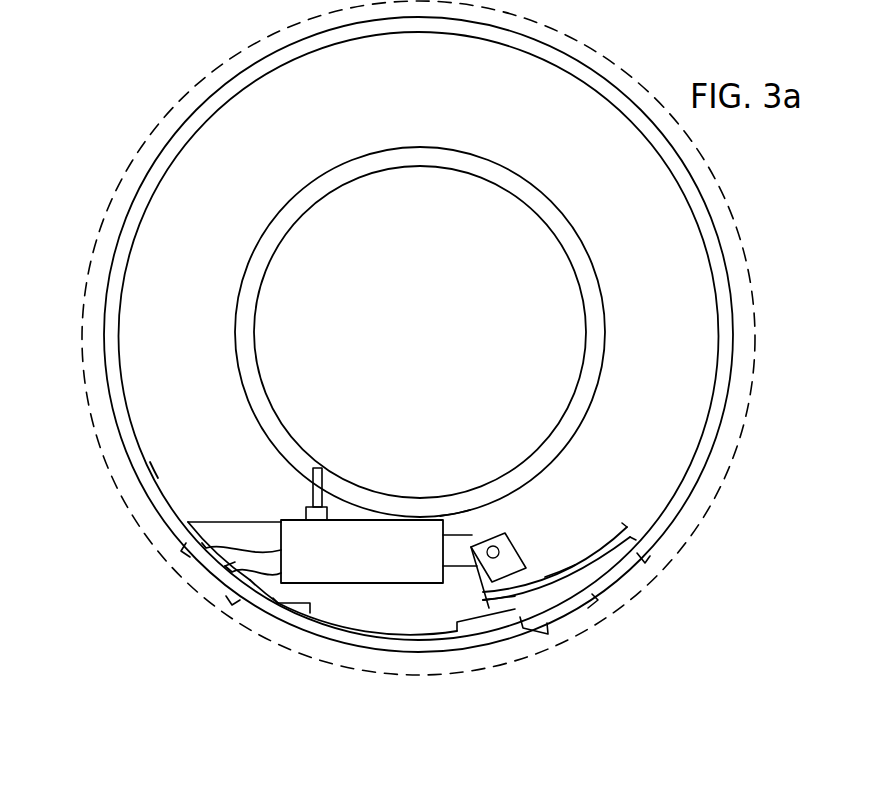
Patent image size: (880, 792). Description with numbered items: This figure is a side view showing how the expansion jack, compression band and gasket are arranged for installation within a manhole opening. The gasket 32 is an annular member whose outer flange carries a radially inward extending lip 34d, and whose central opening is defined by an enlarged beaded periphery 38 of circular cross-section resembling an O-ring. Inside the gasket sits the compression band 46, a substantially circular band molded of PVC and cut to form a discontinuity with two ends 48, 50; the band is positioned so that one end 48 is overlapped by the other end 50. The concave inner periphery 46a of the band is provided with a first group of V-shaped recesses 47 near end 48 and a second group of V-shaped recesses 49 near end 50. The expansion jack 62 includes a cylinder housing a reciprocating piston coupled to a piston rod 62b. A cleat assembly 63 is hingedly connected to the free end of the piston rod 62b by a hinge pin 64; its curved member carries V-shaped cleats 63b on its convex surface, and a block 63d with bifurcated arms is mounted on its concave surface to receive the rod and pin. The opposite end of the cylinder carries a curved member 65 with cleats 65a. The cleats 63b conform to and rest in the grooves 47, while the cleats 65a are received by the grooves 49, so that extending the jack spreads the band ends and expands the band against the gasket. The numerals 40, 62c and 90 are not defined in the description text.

The gasket 32 is at (163, 116).
The lip 34d is at (124, 209).
The compression band 46 is at (110, 292).
The inner periphery 46a is at (149, 462).
The beaded periphery 38 is at (262, 257).
The central bore 40 is at (220, 336).
The piston rod 62b is at (457, 483).
The post 90 is at (311, 490).
The mounting block 62c is at (308, 512).
The expansion jack 62 is at (358, 569).
The curved member 65 is at (213, 531).
The cleats 65a is at (255, 583).
The end 50 is at (452, 622).
The hinge pin 64 is at (506, 535).
The cleat assembly 63 is at (626, 540).
The cleats 63b is at (492, 597).
The block 63d is at (553, 565).
The V-shaped recesses 47 is at (198, 582).
The end 48 is at (530, 623).
The V-shaped recesses 49 is at (612, 588).